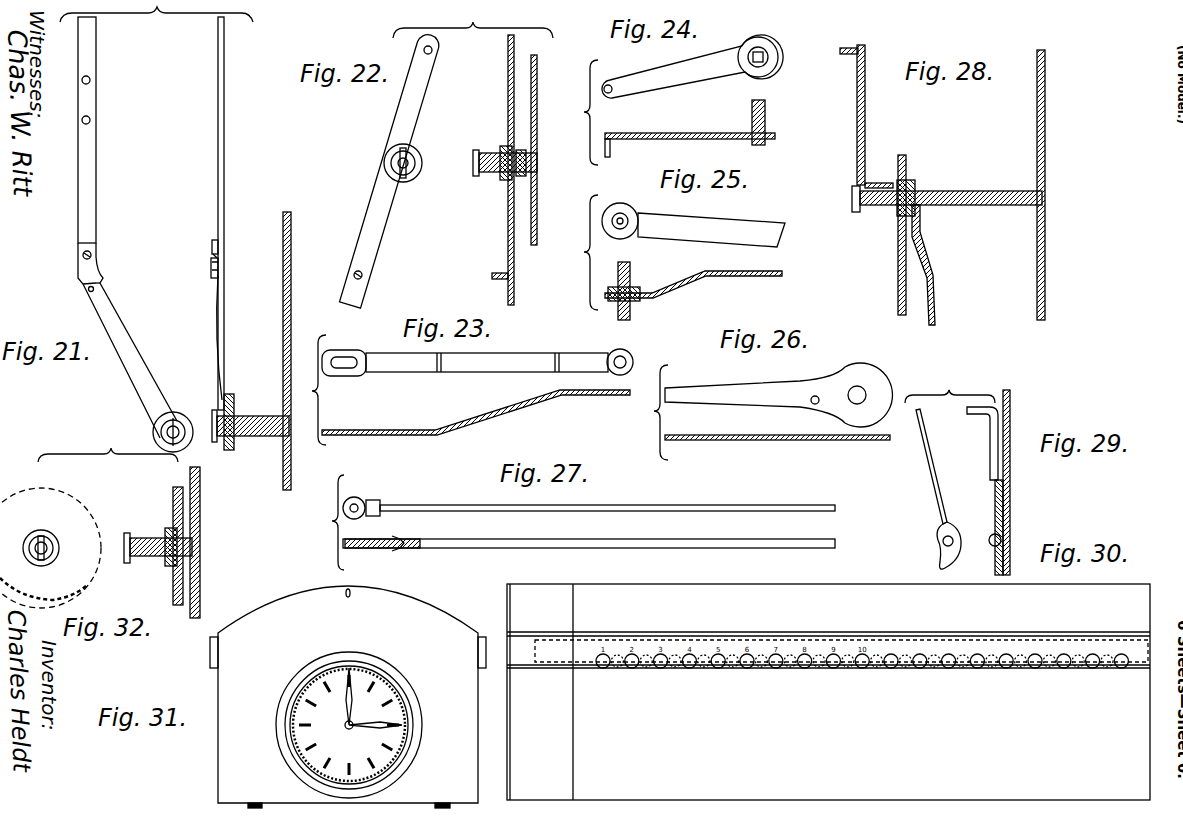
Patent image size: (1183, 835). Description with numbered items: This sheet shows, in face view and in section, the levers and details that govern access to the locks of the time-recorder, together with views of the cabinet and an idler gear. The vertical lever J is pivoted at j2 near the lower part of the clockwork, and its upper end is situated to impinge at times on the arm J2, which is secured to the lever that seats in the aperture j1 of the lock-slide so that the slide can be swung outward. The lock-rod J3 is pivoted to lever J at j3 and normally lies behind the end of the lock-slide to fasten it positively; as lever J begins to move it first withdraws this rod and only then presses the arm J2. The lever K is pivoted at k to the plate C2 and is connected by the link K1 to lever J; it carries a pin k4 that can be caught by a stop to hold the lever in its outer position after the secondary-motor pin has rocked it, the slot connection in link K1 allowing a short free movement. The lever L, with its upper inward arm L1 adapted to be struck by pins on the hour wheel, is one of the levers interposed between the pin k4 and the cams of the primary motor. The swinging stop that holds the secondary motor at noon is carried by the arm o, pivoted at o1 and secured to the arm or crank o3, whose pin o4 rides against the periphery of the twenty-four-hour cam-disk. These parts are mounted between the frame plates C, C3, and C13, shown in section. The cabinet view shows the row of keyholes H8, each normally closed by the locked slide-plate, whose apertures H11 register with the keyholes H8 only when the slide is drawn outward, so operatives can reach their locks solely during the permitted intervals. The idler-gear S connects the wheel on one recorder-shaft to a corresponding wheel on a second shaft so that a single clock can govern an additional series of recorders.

In FIG. 21, the vertical lever J is at (97, 163).
In FIG. 21, the aperture j1 is at (103, 277).
In FIG. 21, the pivot of lever J j2 is at (153, 432).
In FIG. 21, the plate C is at (260, 351).
In FIG. 32, the idler-gear S is at (173, 510).
In FIG. 32, the plate C3 is at (173, 542).
In FIG. 22, the lever K is at (420, 100).
In FIG. 22, the pivot of lever K k is at (384, 163).
In FIG. 22, the pin k4 is at (363, 273).
In FIG. 22, the plate C2 is at (537, 102).
In FIG. 28, the plate C2 is at (885, 235).
In FIG. 30, the plate C2 is at (1008, 392).
In FIG. 23, the link K1 is at (485, 365).
In FIG. 27, the pivot of arm J³ j3 is at (356, 506).
In FIG. 27, the lock-rod J3 is at (608, 511).
In FIG. 24, the arm or crank o3 is at (700, 90).
In FIG. 28, the arm or crank o3 is at (875, 116).
In FIG. 24, the pin o4 is at (620, 99).
In FIG. 28, the pin o4 is at (845, 58).
In FIG. 25, the arm o is at (669, 225).
In FIG. 28, the arm o is at (932, 265).
In FIG. 25, the pivot of arm o o1 is at (620, 215).
In FIG. 28, the pivot of arm o o1 is at (885, 205).
In FIG. 26, the arm J2 is at (775, 402).
In FIG. 28, the plate C13 is at (1059, 185).
In FIG. 29, the arm of lever L L1 is at (938, 483).
In FIG. 30, the lever L is at (990, 430).
In FIG. 31, the keyhole H8 is at (603, 669).
In FIG. 31, the aperture H11 is at (690, 669).